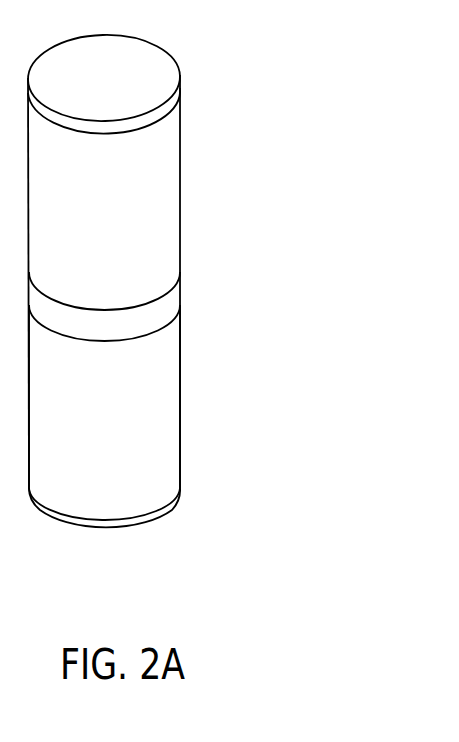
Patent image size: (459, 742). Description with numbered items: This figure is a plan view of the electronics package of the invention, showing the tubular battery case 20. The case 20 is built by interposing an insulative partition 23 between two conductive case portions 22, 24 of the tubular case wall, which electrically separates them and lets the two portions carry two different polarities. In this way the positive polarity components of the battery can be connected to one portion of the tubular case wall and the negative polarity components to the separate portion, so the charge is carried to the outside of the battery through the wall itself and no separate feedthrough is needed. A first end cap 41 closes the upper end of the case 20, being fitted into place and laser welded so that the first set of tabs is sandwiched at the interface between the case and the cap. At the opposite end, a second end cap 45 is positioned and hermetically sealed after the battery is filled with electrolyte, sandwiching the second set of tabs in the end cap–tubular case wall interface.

The case 20 is at (248, 101).
The first end cap 41 is at (108, 95).
The conductive case portion 22 is at (177, 192).
The insulative partition 23 is at (169, 298).
The conductive case portion 24 is at (158, 414).
The second end cap 45 is at (145, 522).